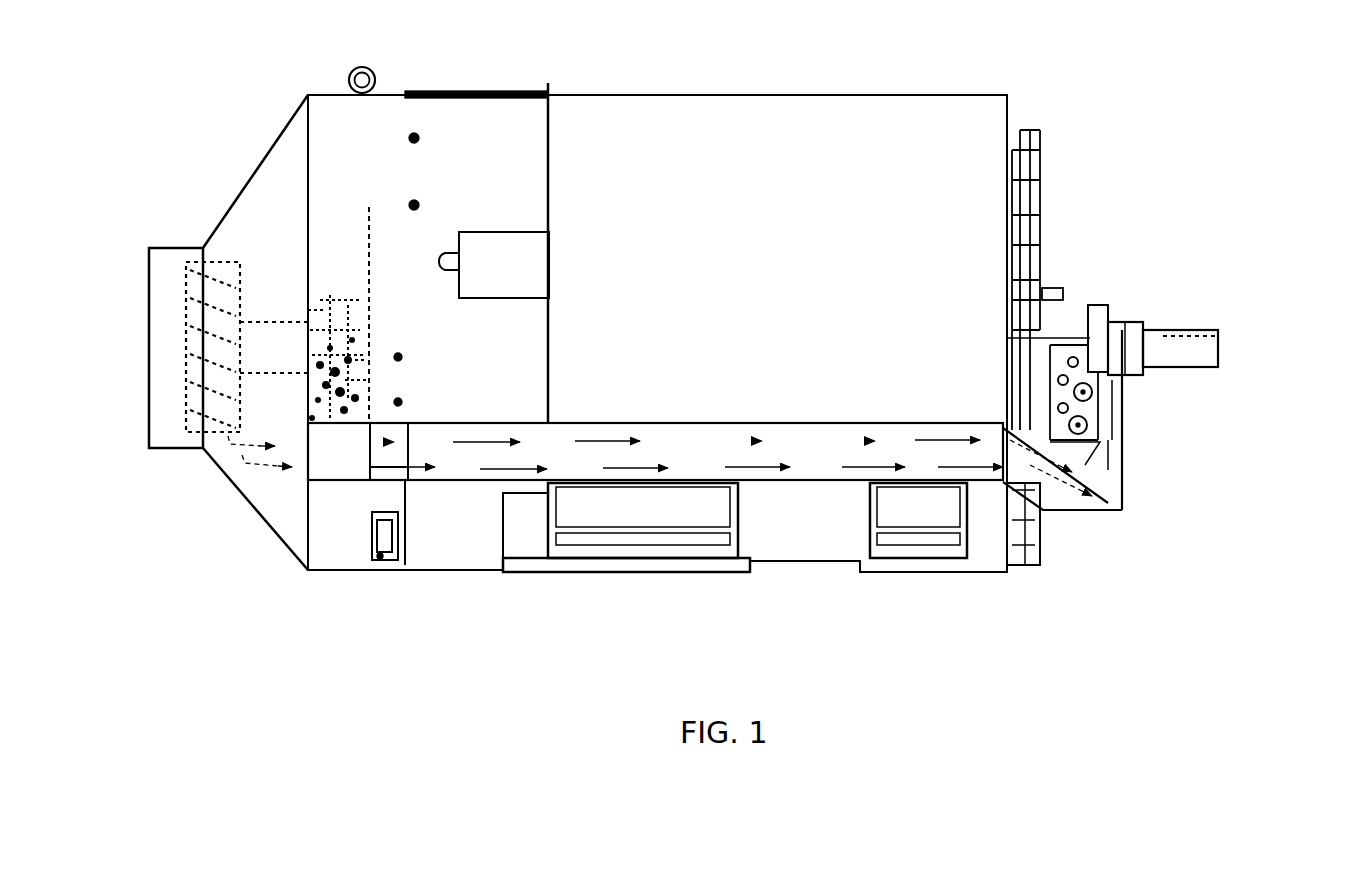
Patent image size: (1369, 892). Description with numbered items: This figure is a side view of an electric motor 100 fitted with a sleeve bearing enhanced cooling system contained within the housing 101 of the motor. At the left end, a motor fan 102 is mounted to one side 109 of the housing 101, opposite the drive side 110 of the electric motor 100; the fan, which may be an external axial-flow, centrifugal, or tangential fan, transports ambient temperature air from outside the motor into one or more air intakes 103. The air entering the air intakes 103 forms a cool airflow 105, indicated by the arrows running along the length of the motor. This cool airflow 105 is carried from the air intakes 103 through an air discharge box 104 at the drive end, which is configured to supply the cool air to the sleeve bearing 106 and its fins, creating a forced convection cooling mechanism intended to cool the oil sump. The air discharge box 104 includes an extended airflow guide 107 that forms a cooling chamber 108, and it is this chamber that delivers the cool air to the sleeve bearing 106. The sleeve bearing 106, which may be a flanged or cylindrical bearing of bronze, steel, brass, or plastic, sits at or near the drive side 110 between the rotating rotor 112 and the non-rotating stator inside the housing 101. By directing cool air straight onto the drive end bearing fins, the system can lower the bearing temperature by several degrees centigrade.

The electric motor 100 is at (428, 56).
The housing 101 is at (740, 93).
The motor fan 102 is at (221, 407).
The air intakes 103 is at (760, 420).
The air discharge box 104 is at (1110, 520).
The cool airflow 105 is at (269, 464).
The sleeve bearing 106 is at (1100, 370).
The airflow guide 107 is at (1128, 408).
The cooling chamber 108 is at (1107, 452).
The side 109 is at (130, 271).
The drive side 110 is at (1188, 292).
The rotor 112 is at (1210, 351).